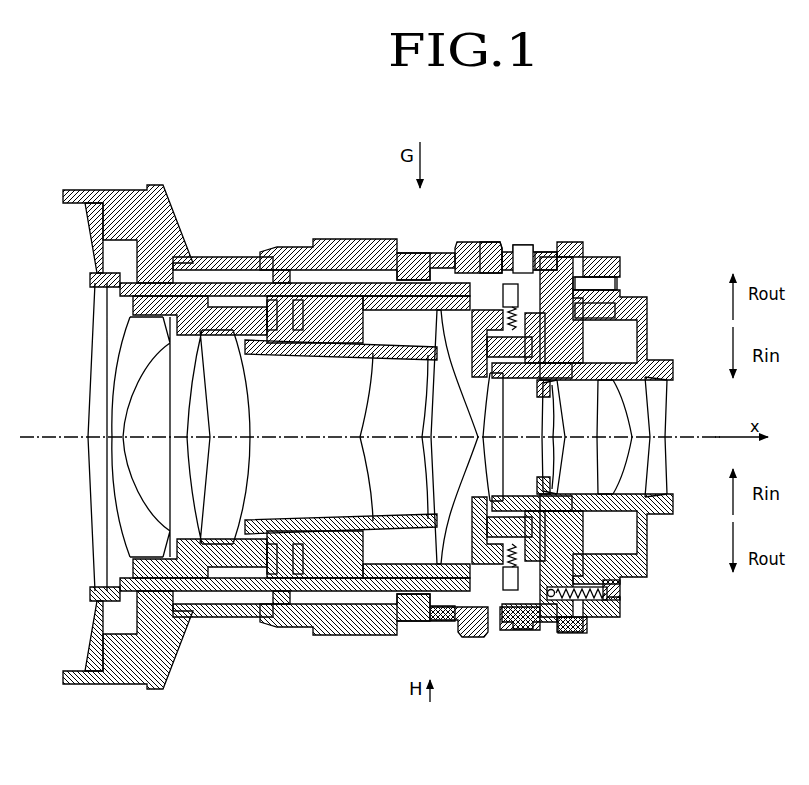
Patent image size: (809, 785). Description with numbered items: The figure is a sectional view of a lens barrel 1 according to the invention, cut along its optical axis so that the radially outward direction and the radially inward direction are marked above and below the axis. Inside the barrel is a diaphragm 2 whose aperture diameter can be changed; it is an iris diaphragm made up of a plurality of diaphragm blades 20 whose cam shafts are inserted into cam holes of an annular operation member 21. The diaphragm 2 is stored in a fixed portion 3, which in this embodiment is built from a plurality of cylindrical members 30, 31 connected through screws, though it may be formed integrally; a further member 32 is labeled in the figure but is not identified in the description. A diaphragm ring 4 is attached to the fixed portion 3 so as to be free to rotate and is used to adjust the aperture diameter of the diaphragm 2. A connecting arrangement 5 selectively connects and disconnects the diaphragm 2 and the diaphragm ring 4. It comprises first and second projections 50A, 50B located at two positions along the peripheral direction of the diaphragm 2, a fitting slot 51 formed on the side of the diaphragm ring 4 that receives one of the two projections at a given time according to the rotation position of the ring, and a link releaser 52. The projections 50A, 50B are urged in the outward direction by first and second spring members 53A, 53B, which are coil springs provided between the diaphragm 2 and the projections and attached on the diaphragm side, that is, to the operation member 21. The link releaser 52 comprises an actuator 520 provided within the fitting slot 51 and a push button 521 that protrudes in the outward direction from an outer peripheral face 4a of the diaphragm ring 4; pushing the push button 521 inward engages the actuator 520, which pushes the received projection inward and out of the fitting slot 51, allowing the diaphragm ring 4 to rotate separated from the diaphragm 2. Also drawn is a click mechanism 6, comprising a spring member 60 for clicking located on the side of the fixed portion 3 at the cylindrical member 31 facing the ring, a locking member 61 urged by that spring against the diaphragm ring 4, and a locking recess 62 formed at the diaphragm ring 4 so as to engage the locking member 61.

The lens barrel 1 is at (707, 228).
The diaphragm 2 is at (465, 354).
The fixed portion 3 is at (391, 258).
The diaphragm ring 4 is at (489, 208).
The outer peripheral face 4a is at (484, 250).
The connecting arrangement 5 is at (571, 381).
The click mechanism 6 is at (605, 648).
The diaphragm blades 20 is at (437, 282).
The annular operation member 21 is at (463, 283).
The cylindrical member 30 is at (346, 240).
The cylindrical member 31 is at (616, 266).
The rear ring portion 32 is at (397, 262).
The first projection 50A is at (585, 262).
The second projection 50B is at (487, 638).
The fitting slot 51 is at (578, 242).
The link releaser 52 is at (538, 396).
The first spring member 53A is at (588, 260).
The second spring member 53B is at (513, 628).
The actuator 520 is at (500, 250).
The push button 521 is at (541, 250).
The spring member for clicking 60 is at (575, 610).
The locking member 61 is at (560, 612).
The locking recess 62 is at (575, 650).